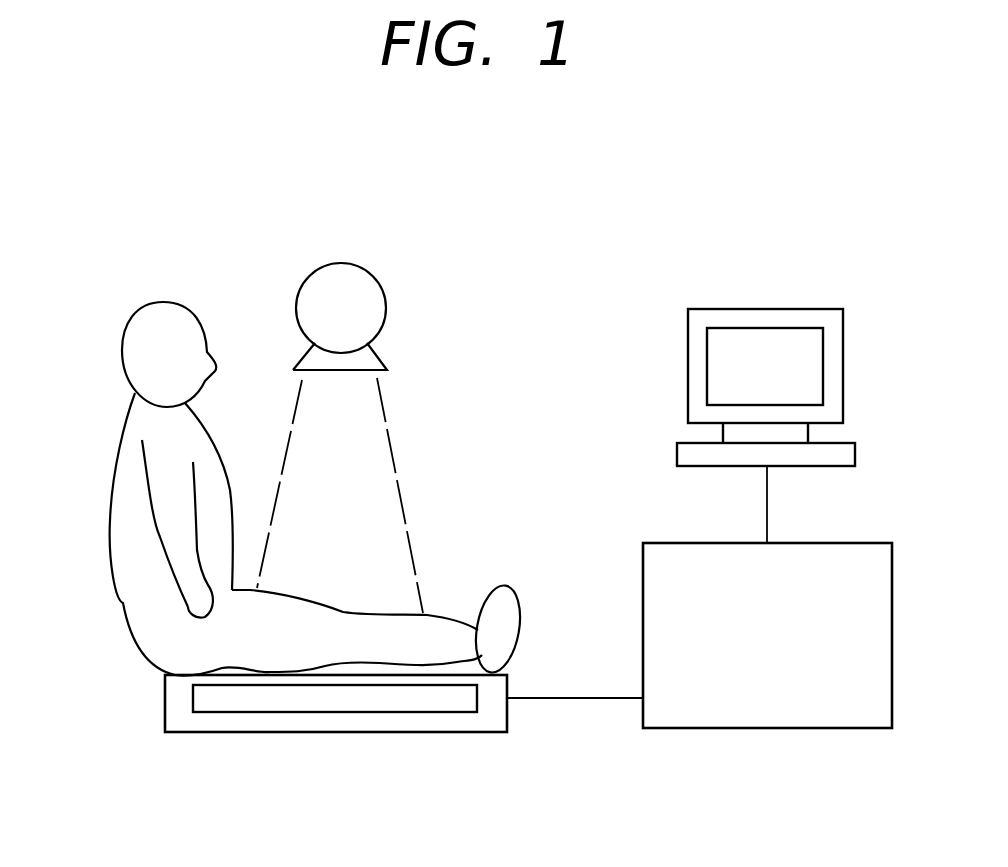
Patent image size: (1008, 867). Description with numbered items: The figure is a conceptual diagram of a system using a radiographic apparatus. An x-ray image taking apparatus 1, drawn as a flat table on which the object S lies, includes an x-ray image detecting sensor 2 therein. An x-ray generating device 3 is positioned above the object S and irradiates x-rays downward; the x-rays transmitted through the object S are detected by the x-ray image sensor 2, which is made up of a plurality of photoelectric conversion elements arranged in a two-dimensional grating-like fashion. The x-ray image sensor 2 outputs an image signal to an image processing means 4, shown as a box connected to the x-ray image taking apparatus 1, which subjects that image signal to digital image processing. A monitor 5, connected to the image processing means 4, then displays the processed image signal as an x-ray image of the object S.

The object S is at (113, 533).
The x-ray image taking apparatus 1 is at (222, 733).
The x-ray image detecting sensor 2 is at (413, 705).
The x-ray generating device 3 is at (338, 278).
The image processing means 4 is at (777, 705).
The monitor 5 is at (758, 348).